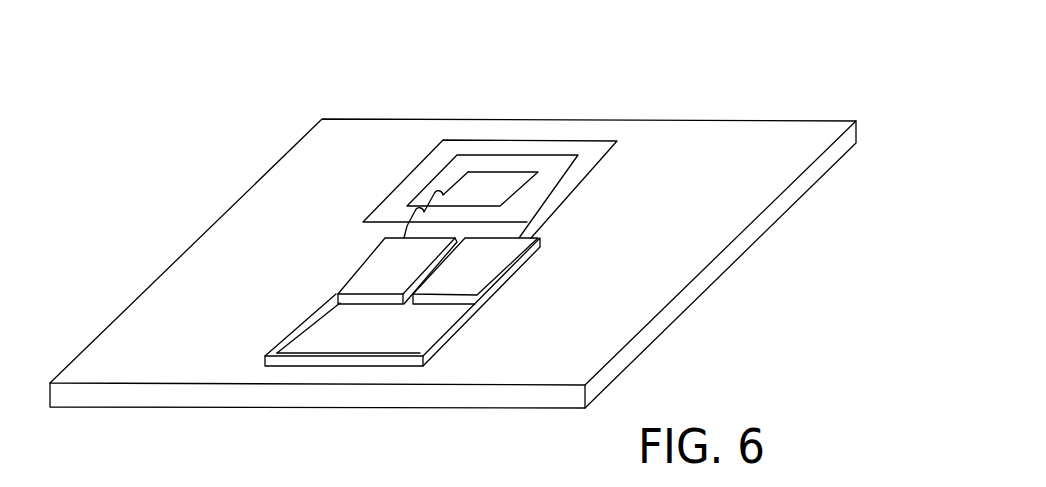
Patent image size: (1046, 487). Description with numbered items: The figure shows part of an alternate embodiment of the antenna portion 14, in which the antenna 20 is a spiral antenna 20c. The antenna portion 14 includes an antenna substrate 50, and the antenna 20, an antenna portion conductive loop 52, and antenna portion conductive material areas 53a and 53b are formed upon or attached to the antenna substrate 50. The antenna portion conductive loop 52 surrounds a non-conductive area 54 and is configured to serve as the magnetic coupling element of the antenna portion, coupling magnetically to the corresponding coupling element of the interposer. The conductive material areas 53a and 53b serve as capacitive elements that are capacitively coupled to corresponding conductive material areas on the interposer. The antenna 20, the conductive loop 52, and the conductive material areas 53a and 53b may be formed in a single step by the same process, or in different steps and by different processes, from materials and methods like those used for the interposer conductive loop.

The antenna portion 14 is at (193, 160).
The antenna 20 is at (483, 125).
The spiral antenna 20c is at (397, 160).
The antenna substrate 50 is at (568, 367).
The antenna portion conductive loop 52 is at (320, 362).
The antenna portion conductive material area 53a is at (360, 272).
The antenna portion conductive material area 53b is at (492, 272).
The non-conductive area 54 is at (375, 338).